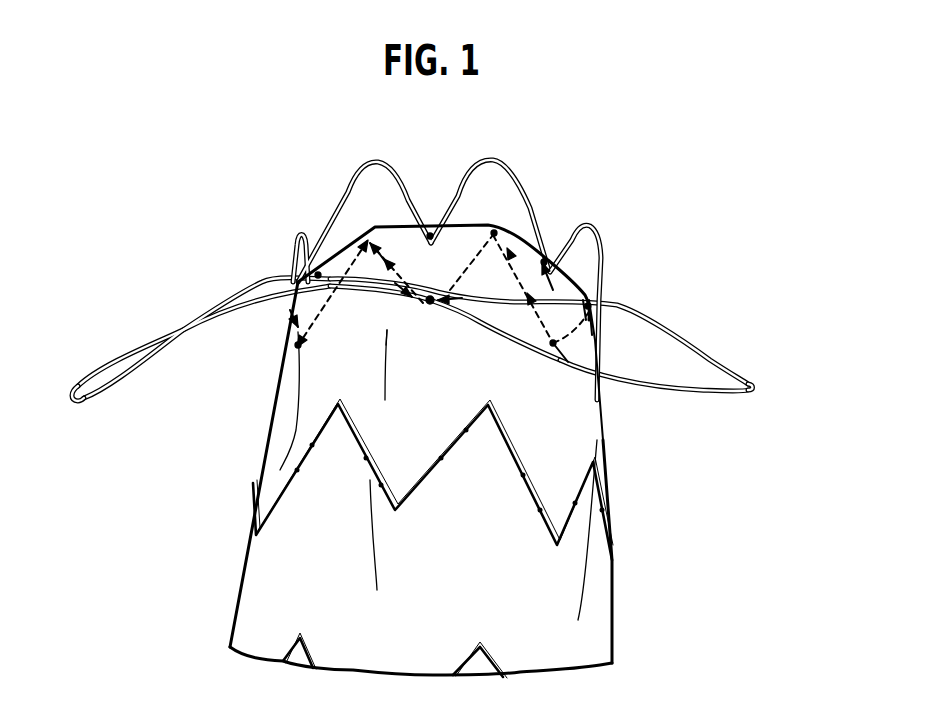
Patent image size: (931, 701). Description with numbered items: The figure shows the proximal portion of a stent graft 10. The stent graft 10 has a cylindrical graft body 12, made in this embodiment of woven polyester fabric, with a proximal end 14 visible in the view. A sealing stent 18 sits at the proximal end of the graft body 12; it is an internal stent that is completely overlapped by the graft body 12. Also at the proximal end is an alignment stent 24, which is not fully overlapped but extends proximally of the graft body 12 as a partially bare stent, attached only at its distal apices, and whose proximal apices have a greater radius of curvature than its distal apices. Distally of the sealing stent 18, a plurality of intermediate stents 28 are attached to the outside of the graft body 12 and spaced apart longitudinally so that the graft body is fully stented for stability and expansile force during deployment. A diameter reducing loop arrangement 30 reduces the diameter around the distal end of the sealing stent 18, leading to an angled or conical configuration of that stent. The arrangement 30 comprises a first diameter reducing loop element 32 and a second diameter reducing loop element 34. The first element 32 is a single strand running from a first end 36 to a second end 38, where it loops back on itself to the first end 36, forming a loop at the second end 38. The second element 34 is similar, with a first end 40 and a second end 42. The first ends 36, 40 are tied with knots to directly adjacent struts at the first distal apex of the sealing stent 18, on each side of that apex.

The stent graft 10 is at (304, 201).
The graft body 12 is at (540, 615).
The proximal end 14 is at (630, 247).
The sealing stent 18 is at (610, 306).
The alignment stent 24 is at (547, 169).
The intermediate stents 28 is at (297, 643).
The diameter reducing loop arrangement 30 is at (755, 361).
The first diameter reducing loop element 32 is at (683, 396).
The second diameter reducing loop element 34 is at (150, 333).
The first end 36 is at (433, 298).
The second end 38 is at (760, 386).
The first end 40 is at (387, 330).
The second end 42 is at (85, 378).